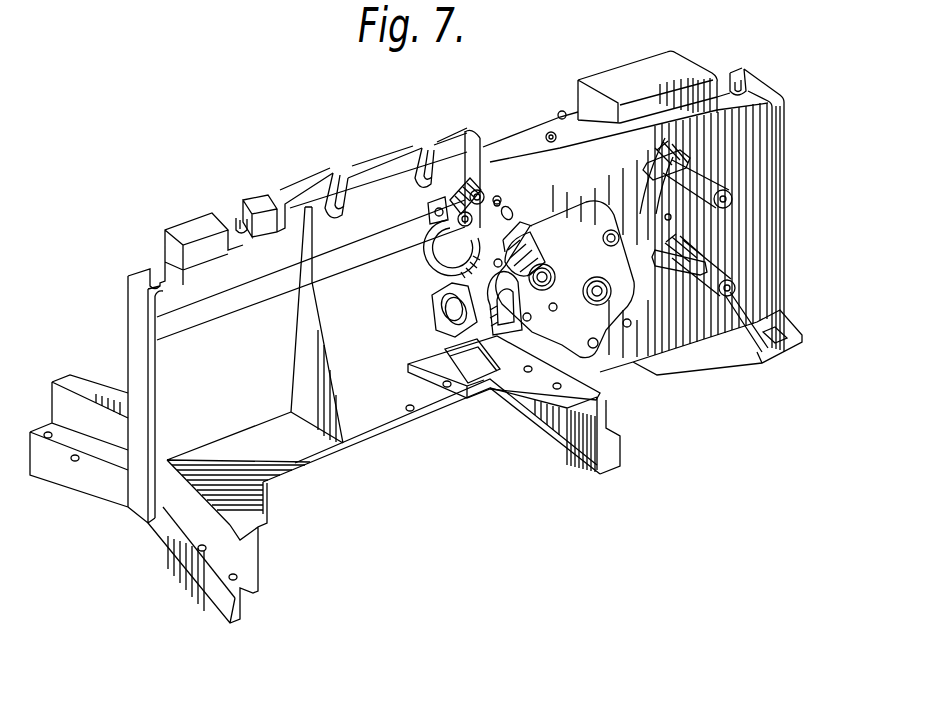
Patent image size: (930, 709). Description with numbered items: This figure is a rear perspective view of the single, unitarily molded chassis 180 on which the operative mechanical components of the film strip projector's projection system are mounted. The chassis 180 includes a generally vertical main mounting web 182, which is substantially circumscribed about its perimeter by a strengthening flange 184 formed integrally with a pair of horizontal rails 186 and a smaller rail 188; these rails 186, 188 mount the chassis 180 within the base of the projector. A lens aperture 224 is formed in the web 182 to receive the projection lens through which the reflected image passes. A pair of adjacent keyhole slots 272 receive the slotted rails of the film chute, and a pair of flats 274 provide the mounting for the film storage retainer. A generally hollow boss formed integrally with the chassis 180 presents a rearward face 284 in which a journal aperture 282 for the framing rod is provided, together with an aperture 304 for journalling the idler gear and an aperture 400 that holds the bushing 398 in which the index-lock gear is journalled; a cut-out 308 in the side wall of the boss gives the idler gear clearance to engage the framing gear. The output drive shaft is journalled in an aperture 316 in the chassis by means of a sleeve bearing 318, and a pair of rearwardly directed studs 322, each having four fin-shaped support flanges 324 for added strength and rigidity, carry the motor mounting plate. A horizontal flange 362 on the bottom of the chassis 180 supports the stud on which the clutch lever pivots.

The chassis 180 is at (305, 176).
The main mounting web 182 is at (170, 382).
The strengthening flange 184 is at (140, 460).
The horizontal rails 186 is at (167, 557).
The smaller rail 188 is at (783, 349).
The lens aperture 224 is at (433, 270).
The keyhole slots 272 is at (428, 148).
The flats 274 is at (148, 262).
The aperture 282 is at (603, 312).
The rearward face 284 is at (630, 298).
The aperture 304 is at (531, 318).
The cut-out 308 is at (492, 332).
The aperture 316 is at (447, 313).
The sleeve bearing 318 is at (445, 290).
The studs 322 is at (718, 268).
The fin-shaped support flanges 324 is at (666, 220).
The horizontal flange 362 is at (377, 418).
The bushing 398 is at (542, 265).
The aperture 400 is at (553, 270).